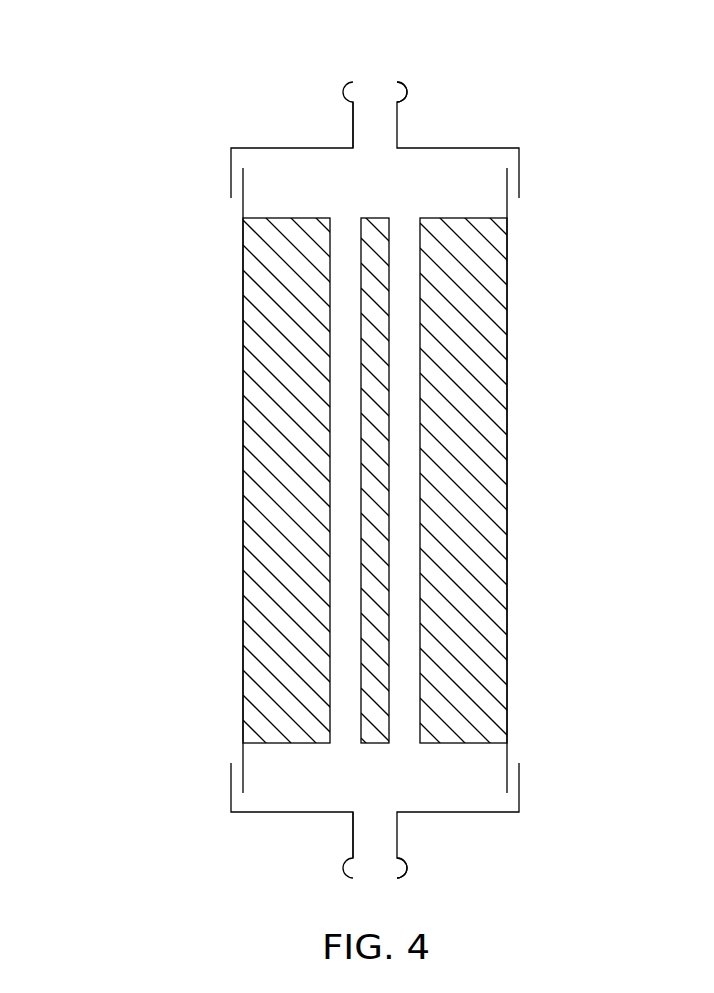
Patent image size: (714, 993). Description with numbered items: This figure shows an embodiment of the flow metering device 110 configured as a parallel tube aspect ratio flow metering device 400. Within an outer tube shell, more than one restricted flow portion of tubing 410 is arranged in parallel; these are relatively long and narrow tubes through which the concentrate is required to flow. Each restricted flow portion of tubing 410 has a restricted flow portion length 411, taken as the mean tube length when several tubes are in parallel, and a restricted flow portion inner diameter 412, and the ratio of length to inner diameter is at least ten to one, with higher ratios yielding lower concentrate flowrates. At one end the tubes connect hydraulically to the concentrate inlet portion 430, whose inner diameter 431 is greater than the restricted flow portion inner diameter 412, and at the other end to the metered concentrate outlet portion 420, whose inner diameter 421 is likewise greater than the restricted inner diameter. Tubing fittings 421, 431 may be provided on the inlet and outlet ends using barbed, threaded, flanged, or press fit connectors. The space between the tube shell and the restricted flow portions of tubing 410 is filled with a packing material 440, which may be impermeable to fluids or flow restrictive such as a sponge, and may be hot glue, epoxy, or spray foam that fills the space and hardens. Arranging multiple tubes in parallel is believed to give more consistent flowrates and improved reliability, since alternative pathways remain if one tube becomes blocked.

The flow metering device 110 is at (128, 97).
The parallel tube aspect ratio flow metering device 400 is at (163, 194).
The restricted flow portion of tubing 410 is at (405, 223).
The restricted flow portion length 411 is at (528, 218).
The restricted flow portion inner diameter 412 is at (425, 745).
The metered concentrate outlet portion 420 is at (353, 127).
The inner diameter of metered concentrate outlet portion 421 is at (409, 93).
The concentrate inlet portion 430 is at (353, 836).
The inner diameter of concentrate inlet portion 431 is at (409, 869).
The packing material 440 is at (243, 310).